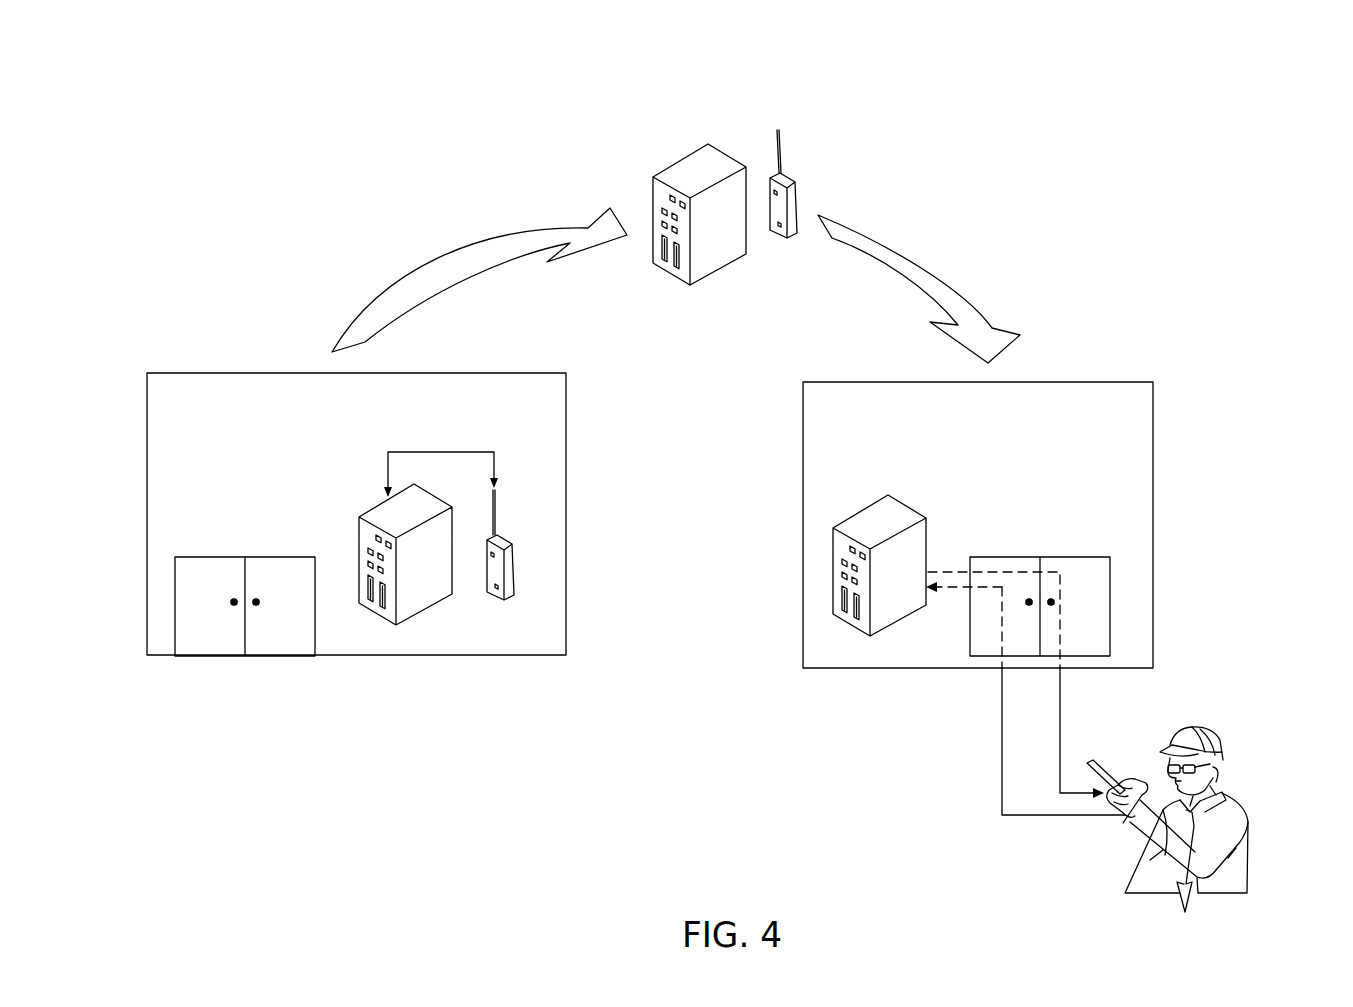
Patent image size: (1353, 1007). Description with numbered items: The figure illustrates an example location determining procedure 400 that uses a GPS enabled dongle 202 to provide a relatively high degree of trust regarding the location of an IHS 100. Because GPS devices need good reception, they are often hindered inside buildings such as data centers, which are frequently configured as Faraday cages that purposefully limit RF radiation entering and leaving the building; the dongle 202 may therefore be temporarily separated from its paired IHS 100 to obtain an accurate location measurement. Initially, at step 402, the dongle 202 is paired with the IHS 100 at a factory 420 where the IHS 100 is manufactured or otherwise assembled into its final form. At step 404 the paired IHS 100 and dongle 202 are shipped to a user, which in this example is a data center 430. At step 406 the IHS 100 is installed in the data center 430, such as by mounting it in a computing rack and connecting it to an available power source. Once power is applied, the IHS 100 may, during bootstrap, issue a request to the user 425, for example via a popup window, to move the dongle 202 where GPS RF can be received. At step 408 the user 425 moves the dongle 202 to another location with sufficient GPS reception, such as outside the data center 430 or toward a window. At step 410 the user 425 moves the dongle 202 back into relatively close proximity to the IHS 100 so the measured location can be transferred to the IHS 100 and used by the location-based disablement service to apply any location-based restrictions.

The location determining procedure 400 is at (1108, 56).
The IHS 100 is at (673, 277).
The wireless dongle 202 is at (798, 195).
The pairing step 402 is at (345, 523).
The shipping step 404 is at (516, 395).
The installation step 406 is at (916, 492).
The dongle relocation step 408 is at (1215, 781).
The dongle return step 410 is at (960, 624).
The factory 420 is at (208, 373).
The user 425 is at (1253, 850).
The data center 430 is at (865, 382).